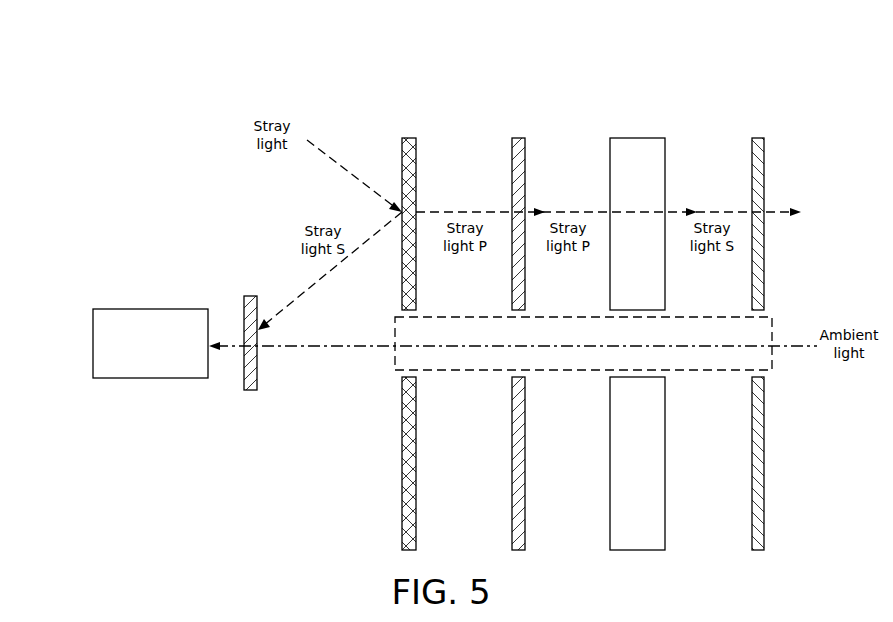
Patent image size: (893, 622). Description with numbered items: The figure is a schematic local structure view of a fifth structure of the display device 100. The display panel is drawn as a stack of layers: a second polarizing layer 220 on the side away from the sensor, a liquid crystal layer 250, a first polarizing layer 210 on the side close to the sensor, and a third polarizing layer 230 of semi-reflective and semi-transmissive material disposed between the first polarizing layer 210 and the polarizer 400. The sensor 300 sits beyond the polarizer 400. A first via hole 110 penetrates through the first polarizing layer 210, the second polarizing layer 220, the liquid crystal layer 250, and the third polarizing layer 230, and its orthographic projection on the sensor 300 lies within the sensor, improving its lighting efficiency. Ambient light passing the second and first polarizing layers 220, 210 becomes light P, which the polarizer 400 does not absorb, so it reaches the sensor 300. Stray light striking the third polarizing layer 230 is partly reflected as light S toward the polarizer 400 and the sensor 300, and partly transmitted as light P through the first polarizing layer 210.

The display device 100 is at (68, 54).
The first via hole 110 is at (389, 375).
The first polarizing layer 210 is at (512, 146).
The second polarizing layer 220 is at (765, 148).
The third polarizing layer 230 is at (402, 154).
The liquid crystal layer 250 is at (632, 138).
The sensor 300 is at (133, 378).
The polarizer 400 is at (251, 390).